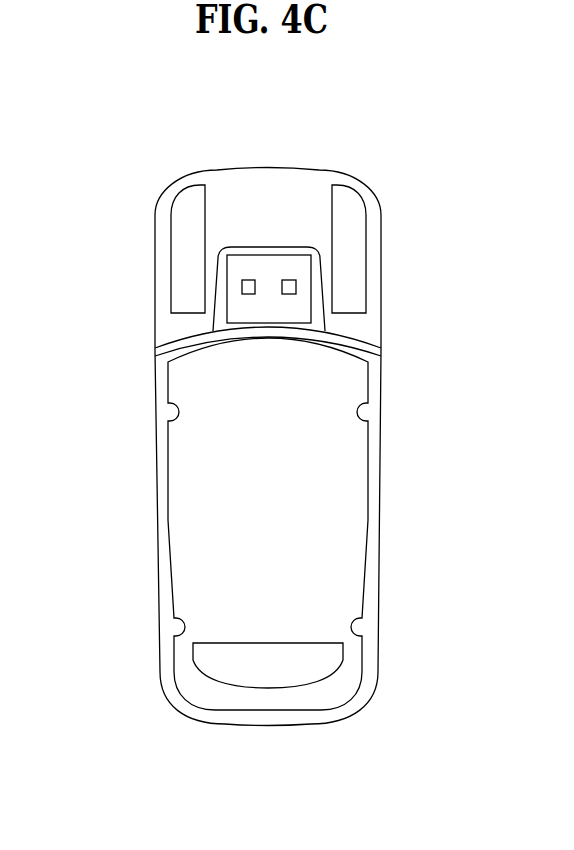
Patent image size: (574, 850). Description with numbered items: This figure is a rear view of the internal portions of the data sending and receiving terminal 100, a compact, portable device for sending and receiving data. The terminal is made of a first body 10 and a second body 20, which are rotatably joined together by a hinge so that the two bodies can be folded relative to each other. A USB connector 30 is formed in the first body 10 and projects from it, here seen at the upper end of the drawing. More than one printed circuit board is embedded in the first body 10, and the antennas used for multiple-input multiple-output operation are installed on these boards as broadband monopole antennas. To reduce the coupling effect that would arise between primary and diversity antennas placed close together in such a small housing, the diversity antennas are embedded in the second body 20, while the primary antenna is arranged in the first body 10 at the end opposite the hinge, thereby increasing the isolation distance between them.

The data sending and receiving terminal 100 is at (79, 163).
The first body 10 is at (380, 568).
The second body 20 is at (382, 305).
The USB connector 30 is at (266, 272).